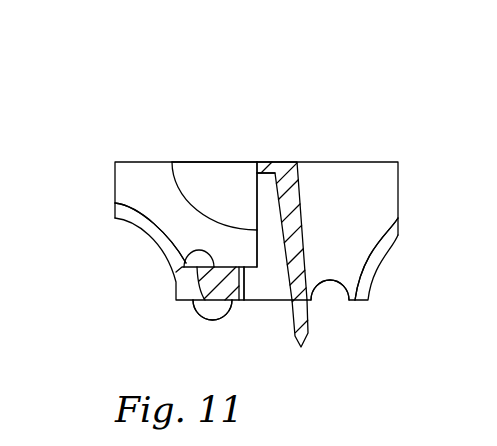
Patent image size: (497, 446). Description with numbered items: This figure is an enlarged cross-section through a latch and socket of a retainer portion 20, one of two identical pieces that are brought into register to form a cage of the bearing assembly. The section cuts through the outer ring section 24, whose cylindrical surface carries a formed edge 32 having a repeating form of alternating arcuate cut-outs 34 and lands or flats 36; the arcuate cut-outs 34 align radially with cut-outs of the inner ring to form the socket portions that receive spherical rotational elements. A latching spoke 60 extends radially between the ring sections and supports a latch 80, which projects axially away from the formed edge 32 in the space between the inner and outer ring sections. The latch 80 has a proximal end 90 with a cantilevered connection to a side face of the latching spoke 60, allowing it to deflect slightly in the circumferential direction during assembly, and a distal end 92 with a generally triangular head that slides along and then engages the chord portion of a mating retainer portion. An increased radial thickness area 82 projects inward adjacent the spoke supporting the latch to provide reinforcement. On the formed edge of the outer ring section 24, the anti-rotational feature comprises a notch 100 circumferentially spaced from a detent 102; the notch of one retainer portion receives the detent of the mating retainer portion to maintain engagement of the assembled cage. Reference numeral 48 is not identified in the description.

The retainer portion 20 is at (212, 185).
The outer ring section 24 is at (115, 187).
The formed edge 32 is at (258, 295).
The arcuate cut-out 34 is at (150, 235).
The land 36 is at (245, 296).
The seat 48 is at (186, 260).
The latching spoke 60 is at (265, 165).
The latch 80 is at (300, 160).
The increased radial thickness area 82 is at (172, 168).
The proximal end 90 is at (253, 168).
The distal end 92 is at (303, 345).
The notch 100 is at (330, 278).
The detent 102 is at (195, 318).